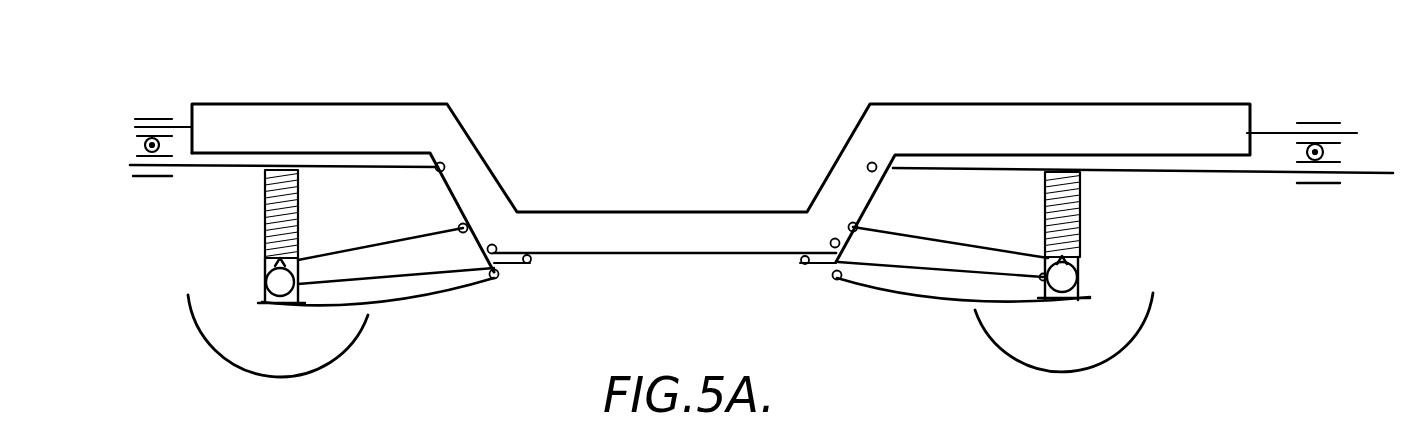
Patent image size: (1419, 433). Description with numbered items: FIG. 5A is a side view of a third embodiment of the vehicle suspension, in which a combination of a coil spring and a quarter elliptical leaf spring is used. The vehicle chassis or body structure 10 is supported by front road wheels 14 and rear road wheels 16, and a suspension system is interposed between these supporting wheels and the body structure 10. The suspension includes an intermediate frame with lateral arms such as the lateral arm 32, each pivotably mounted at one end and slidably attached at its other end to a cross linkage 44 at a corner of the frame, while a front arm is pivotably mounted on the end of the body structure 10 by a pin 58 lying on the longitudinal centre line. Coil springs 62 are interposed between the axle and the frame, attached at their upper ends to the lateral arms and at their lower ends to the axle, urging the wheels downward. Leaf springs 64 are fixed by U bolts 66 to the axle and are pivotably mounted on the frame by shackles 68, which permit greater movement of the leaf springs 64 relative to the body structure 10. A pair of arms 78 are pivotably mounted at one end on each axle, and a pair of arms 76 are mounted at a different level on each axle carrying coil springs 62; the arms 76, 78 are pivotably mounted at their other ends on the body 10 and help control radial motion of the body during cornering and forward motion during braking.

The vehicle chassis/body structure 10 is at (978, 116).
The front road wheels 14 is at (347, 346).
The rear road wheels 16 is at (1153, 295).
The lateral arm 32 is at (208, 169).
The cross linkage 44 is at (140, 168).
The pin 58 is at (153, 117).
The coil springs 62 is at (265, 229).
The leaf springs 64 is at (420, 305).
The U bolts 66 is at (262, 296).
The shackles 68 is at (490, 262).
The arms 76 is at (375, 245).
The arms 78 is at (455, 275).